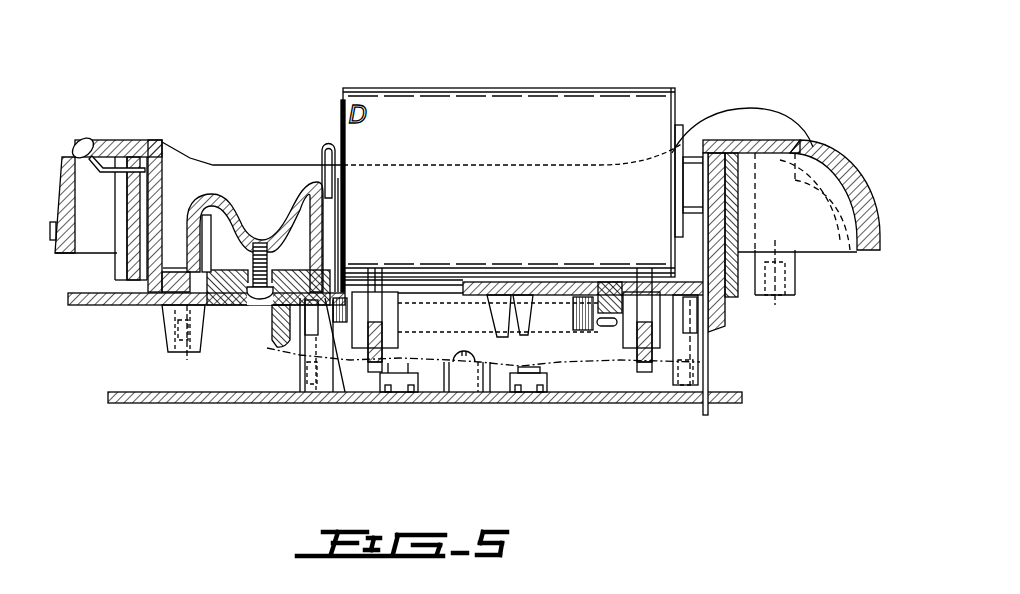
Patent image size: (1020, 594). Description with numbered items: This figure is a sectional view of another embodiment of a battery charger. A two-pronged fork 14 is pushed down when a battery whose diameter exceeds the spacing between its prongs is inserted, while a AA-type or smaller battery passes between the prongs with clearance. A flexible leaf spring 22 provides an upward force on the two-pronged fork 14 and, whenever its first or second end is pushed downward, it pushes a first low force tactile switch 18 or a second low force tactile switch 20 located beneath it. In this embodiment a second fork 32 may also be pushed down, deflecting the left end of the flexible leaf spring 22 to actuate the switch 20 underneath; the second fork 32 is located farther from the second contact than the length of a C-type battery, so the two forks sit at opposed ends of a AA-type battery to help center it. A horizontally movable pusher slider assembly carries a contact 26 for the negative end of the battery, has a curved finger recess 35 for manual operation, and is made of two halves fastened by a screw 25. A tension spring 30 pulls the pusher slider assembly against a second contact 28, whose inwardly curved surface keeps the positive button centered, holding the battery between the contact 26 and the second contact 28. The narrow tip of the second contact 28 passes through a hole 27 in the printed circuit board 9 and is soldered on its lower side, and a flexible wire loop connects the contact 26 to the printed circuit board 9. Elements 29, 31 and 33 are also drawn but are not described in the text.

The printed circuit board 9 is at (172, 400).
The two-pronged fork 14 is at (645, 268).
The first low force tactile switch 18 is at (533, 387).
The second low force tactile switch 20 is at (402, 387).
The flexible leaf spring 22 is at (283, 350).
The screw 25 is at (252, 240).
The contact 26 is at (325, 146).
The hole 27 is at (712, 386).
The second contact 28 is at (718, 140).
The wall 29 is at (712, 348).
The tension spring 30 is at (337, 353).
The post 31 is at (343, 247).
The second fork 32 is at (375, 268).
The cable 33 is at (343, 180).
The curved finger recess 35 is at (279, 220).